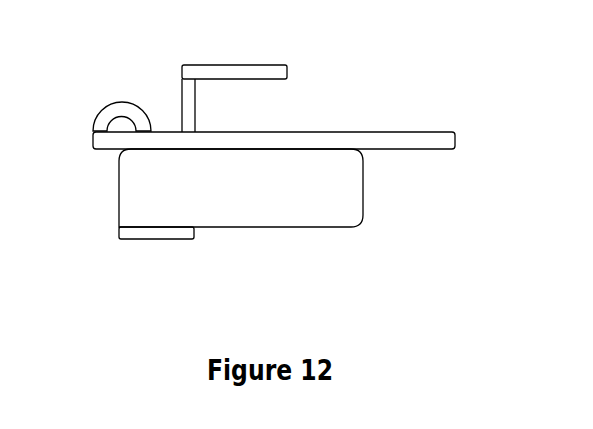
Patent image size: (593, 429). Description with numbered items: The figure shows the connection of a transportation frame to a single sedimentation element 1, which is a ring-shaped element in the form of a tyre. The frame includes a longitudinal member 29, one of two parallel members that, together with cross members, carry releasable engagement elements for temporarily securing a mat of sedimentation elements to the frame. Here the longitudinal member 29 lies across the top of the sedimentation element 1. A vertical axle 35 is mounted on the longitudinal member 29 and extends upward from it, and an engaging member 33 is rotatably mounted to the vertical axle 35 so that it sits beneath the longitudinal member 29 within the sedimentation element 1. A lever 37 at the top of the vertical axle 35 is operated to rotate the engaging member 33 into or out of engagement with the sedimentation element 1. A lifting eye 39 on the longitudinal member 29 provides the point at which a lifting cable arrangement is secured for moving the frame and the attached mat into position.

The sedimentation element 1 is at (343, 188).
The longitudinal member 29 is at (405, 139).
The engaging member 33 is at (132, 237).
The vertical axle 35 is at (184, 102).
The lever 37 is at (270, 65).
The lifting eye 39 is at (108, 108).